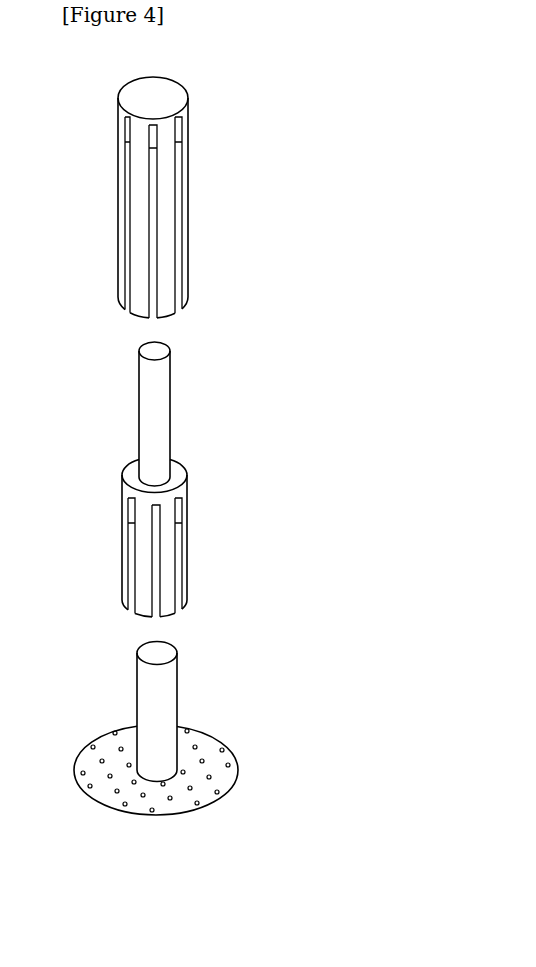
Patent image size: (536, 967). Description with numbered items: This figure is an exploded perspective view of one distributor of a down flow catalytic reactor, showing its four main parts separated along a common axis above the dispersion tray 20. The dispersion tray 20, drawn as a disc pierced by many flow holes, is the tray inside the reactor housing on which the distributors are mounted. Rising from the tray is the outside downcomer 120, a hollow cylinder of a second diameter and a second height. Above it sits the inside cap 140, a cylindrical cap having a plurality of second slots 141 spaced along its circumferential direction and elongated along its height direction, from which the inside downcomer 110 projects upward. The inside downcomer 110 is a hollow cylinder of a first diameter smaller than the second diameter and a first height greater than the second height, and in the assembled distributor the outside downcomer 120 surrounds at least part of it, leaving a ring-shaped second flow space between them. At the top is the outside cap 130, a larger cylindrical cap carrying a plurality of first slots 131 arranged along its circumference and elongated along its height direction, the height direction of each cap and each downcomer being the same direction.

The outside cap 130 is at (176, 69).
The first slots 131 is at (153, 220).
The inside downcomer 110 is at (170, 373).
The inside cap 140 is at (196, 453).
The second slots 141 is at (177, 563).
The outside downcomer 120 is at (177, 678).
The dispersion tray 20 is at (233, 750).